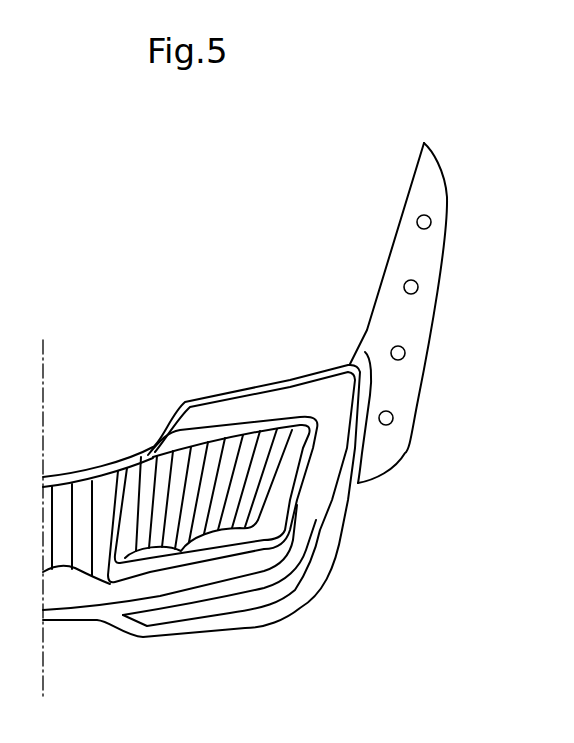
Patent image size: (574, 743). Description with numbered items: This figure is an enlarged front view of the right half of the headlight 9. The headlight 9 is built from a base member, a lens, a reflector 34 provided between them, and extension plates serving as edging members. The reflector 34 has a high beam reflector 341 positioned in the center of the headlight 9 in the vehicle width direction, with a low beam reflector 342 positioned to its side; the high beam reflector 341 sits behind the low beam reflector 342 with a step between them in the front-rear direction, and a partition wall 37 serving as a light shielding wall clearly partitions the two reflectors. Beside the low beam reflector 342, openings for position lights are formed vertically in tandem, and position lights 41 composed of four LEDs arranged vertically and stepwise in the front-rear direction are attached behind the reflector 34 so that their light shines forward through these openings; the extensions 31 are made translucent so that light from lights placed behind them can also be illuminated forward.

The headlight 9 is at (403, 533).
The extensions 31 is at (257, 405).
The reflector 34 is at (305, 580).
The partition wall 37 is at (121, 477).
The position light 41 is at (432, 222).
The high beam reflector 341 is at (82, 557).
The low beam reflector 342 is at (199, 522).